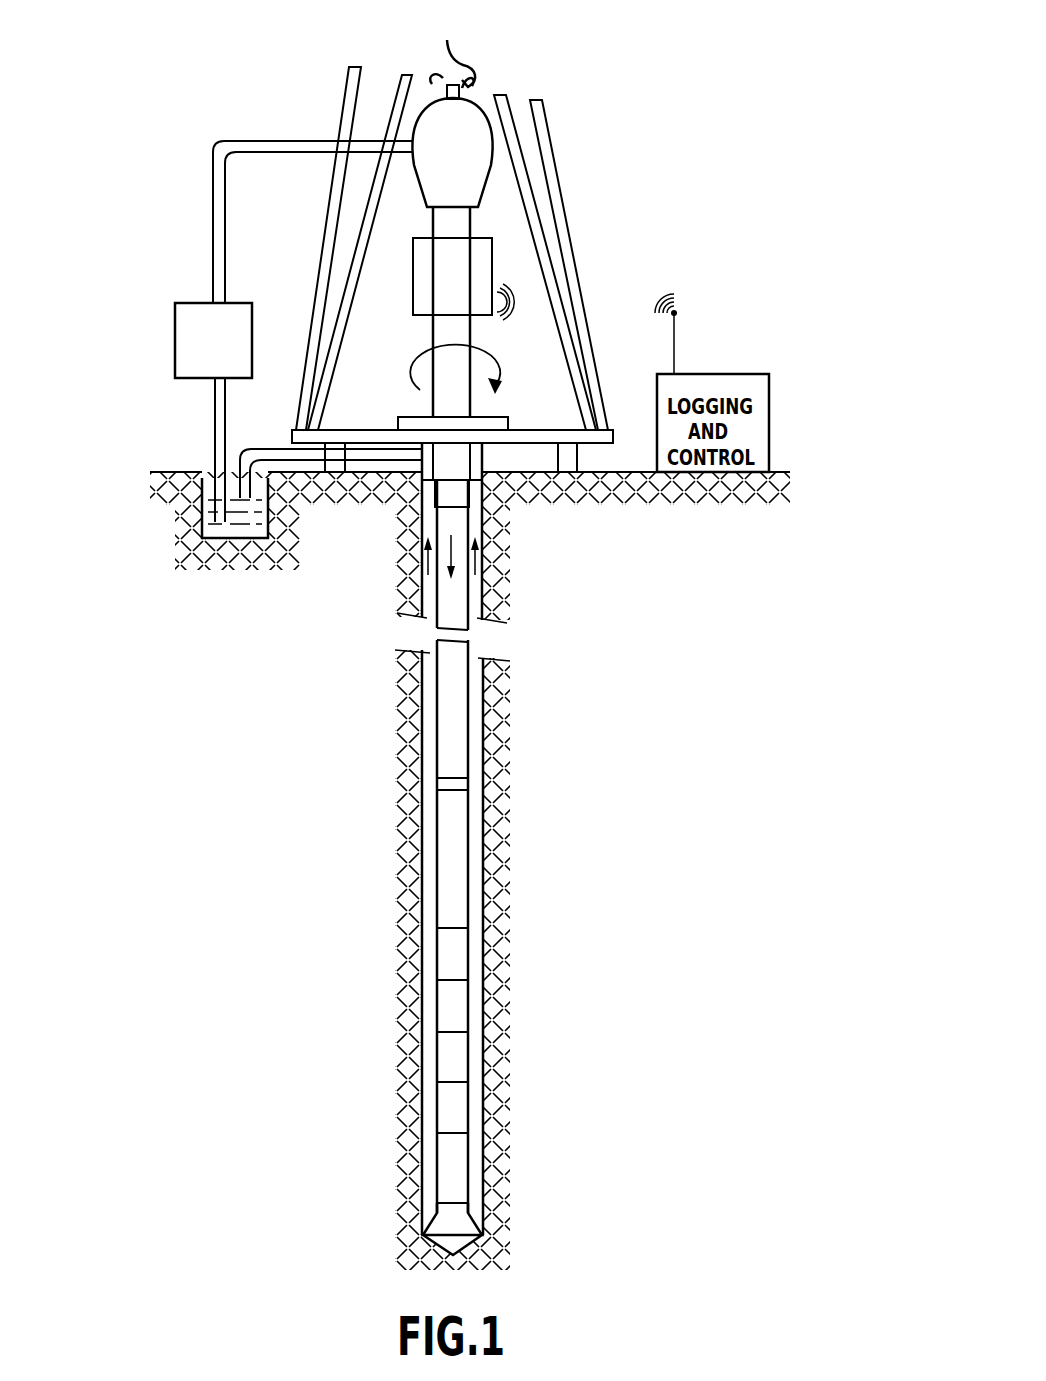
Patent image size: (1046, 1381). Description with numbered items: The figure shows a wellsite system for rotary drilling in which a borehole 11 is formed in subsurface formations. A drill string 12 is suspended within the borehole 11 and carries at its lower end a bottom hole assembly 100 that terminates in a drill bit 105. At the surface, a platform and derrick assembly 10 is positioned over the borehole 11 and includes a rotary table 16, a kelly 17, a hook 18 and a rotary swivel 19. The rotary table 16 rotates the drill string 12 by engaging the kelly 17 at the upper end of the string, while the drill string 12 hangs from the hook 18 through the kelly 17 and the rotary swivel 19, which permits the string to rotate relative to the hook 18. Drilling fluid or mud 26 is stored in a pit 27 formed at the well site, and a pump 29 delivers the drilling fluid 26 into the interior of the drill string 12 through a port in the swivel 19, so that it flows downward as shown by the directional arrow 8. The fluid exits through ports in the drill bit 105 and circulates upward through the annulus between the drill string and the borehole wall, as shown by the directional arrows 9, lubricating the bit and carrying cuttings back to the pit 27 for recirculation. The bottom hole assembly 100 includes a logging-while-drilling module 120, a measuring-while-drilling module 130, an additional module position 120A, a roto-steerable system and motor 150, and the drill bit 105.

The directional arrow 8 is at (447, 566).
The directional arrows 9 is at (424, 554).
The platform and derrick assembly 10 is at (586, 134).
The borehole 11 is at (479, 481).
The drill string 12 is at (448, 477).
The rotary table 16 is at (502, 416).
The kelly 17 is at (450, 327).
The hook 18 is at (446, 47).
The rotary swivel 19 is at (421, 183).
The drilling fluid 26 is at (238, 530).
The pit 27 is at (206, 470).
The pump 29 is at (253, 346).
The bottom hole assembly 100 is at (372, 930).
The drill bit 105 is at (457, 1231).
The logging-while-drilling module 120 is at (455, 1003).
The additional logging-while-drilling module 120A is at (455, 1106).
The measuring-while-drilling module 130 is at (455, 1058).
The roto-steerable system and motor 150 is at (453, 1165).